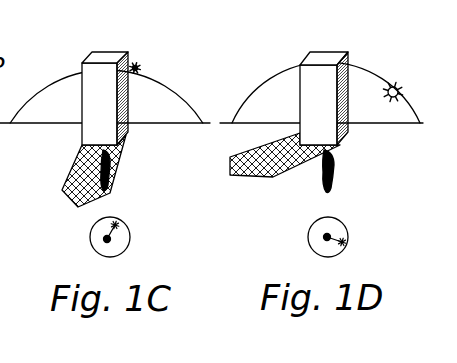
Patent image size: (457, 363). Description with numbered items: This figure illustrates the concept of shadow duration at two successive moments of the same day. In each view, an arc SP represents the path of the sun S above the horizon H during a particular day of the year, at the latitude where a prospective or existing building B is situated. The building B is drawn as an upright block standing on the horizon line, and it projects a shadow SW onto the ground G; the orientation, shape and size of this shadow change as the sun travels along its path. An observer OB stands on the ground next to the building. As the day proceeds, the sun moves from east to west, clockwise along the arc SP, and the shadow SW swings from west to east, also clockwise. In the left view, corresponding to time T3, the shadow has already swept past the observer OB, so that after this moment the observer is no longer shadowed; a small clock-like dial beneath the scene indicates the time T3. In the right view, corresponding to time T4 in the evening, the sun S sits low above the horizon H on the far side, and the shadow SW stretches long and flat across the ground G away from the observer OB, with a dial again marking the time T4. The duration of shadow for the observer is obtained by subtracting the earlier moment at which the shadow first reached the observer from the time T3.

In FIG. 1C, the building B is at (106, 50).
In FIG. 1D, the building B is at (327, 50).
In FIG. 1C, the sun S is at (140, 67).
In FIG. 1D, the sun S is at (397, 84).
In FIG. 1C, the path of the sun SP is at (160, 83).
In FIG. 1D, the path of the sun SP is at (292, 68).
In FIG. 1C, the horizon H is at (105, 138).
In FIG. 1D, the horizon H is at (322, 139).
In FIG. 1C, the shadow SW is at (122, 171).
In FIG. 1D, the shadow SW is at (270, 173).
In FIG. 1C, the ground G is at (50, 192).
In FIG. 1D, the ground G is at (298, 210).
In FIG. 1C, the observer OB is at (137, 176).
In FIG. 1D, the observer OB is at (361, 172).
In FIG. 1C, the time T3 is at (82, 231).
In FIG. 1D, the time T4 is at (301, 235).